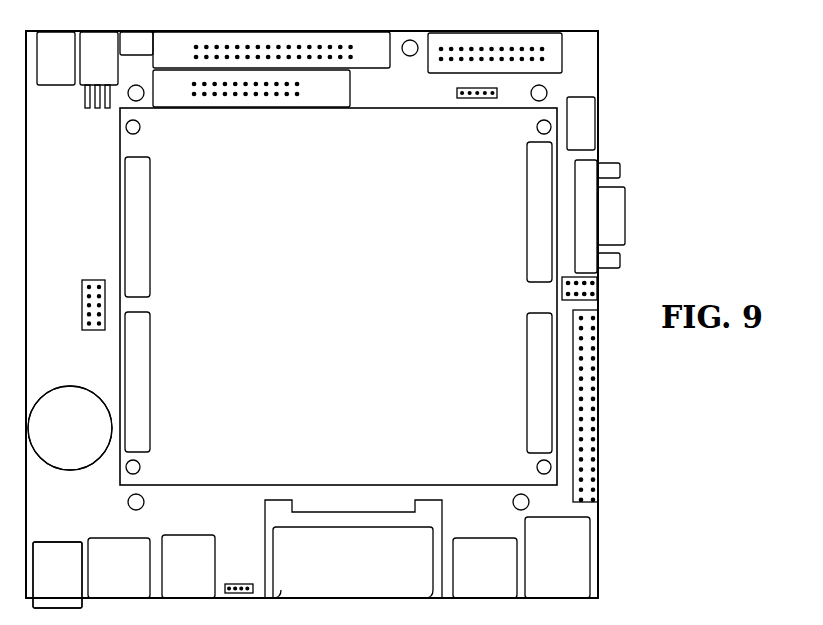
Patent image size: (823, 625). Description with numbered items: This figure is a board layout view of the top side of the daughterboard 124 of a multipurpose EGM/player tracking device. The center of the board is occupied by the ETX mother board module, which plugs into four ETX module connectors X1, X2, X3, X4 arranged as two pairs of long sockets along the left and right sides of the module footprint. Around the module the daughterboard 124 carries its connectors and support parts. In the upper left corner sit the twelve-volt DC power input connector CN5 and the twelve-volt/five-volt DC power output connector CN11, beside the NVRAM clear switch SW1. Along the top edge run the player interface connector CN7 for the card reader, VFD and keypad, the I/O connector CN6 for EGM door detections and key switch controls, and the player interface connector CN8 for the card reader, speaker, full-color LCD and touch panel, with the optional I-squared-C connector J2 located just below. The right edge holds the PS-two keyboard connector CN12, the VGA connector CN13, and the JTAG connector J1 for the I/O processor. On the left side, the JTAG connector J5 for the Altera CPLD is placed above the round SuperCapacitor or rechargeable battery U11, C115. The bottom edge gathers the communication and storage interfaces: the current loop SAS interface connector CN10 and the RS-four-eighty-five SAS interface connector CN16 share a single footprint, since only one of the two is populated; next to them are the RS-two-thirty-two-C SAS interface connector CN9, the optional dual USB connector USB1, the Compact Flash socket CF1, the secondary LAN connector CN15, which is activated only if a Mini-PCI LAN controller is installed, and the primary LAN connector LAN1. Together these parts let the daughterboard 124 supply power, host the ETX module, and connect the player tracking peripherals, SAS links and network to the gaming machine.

The daughterboard 124 is at (599, 555).
The ETX module connector X1 is at (137, 227).
The ETX module connector X2 is at (137, 382).
The ETX module connector X3 is at (539, 212).
The ETX module connector X4 is at (539, 383).
The 12 VDC power input connector CN5 is at (56, 58).
The 12 VDC/5 VDC power output connector CN11 is at (99, 70).
The NVRAM clear switch SW1 is at (136, 43).
The player interface connector CN7 is at (271, 50).
The I/O connector CN6 is at (251, 88).
The player interface connector CN8 is at (515, 53).
The I2C connector J2 is at (467, 93).
The PS/2 keyboard connector CN12 is at (584, 123).
The VGA connector CN13 is at (600, 216).
The JTAG connector for I/O processor J1 is at (587, 288).
The JTAG connector for Altera CPLD J5 is at (93, 295).
The SuperCapacitor or rechargeable battery U11 is at (70, 428).
The SuperCapacitor or rechargeable battery C115 is at (70, 428).
The current loop SAS interface connector CN10 is at (57, 575).
The RS485 SAS interface connector CN16 is at (57, 575).
The RS232C SAS interface connector CN9 is at (119, 568).
The USB connector USB1 is at (188, 566).
The Compact Flash socket CF1 is at (353, 549).
The secondary LAN connector CN15 is at (485, 568).
The primary LAN connector LAN1 is at (557, 557).